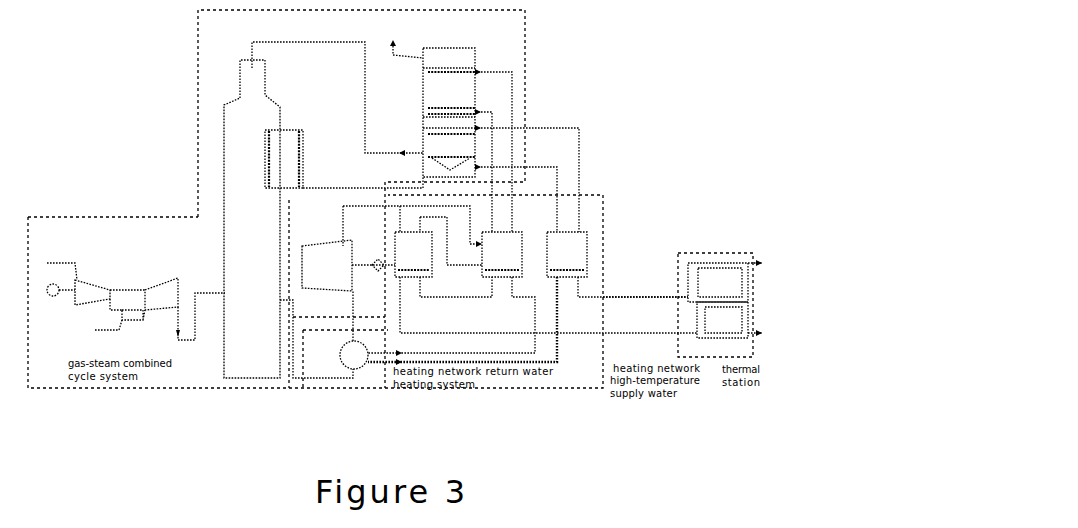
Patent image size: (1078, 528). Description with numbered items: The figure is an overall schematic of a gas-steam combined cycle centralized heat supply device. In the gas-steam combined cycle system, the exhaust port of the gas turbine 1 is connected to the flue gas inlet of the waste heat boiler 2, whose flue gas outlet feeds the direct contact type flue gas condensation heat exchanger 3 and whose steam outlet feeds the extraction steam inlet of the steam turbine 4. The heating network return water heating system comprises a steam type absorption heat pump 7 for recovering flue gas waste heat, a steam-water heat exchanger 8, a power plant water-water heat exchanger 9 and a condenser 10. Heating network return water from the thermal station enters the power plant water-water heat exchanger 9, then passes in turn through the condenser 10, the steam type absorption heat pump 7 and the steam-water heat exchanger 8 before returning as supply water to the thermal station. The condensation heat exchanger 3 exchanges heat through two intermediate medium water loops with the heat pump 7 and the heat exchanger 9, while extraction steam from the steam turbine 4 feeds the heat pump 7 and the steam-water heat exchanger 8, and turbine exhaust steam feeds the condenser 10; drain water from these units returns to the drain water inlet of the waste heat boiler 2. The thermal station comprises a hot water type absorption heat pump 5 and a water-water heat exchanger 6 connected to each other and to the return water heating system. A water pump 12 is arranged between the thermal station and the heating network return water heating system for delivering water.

The gas turbine 1 is at (136, 289).
The waste heat boiler 2 is at (323, 203).
The direct contact type flue gas condensation heat exchanger 3 is at (501, 140).
The steam turbine 4 is at (348, 242).
The hot water type absorption heat pump 5 is at (764, 323).
The water-water heat exchanger 6 is at (755, 279).
The steam type absorption heat pump for recovering flue gas waste heat 7 is at (451, 292).
The steam-water heat exchanger 8 is at (546, 269).
The power plant water-water heat exchanger 9 is at (528, 297).
The condenser 10 is at (350, 368).
The water pump 12 is at (615, 295).